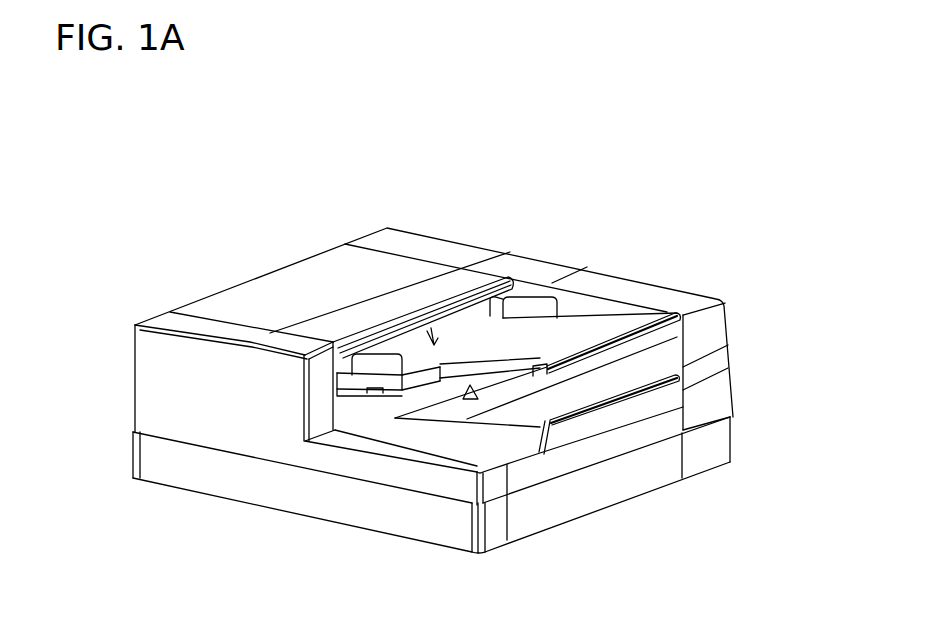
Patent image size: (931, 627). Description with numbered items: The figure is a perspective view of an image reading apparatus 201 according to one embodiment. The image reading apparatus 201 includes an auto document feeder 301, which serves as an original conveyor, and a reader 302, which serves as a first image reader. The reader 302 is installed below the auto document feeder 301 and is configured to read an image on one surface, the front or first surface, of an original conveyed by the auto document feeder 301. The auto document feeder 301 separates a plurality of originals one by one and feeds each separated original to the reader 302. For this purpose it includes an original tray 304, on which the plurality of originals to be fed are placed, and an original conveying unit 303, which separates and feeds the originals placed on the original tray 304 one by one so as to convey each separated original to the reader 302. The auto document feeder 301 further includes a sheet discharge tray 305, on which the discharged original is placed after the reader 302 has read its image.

The image reading apparatus 201 is at (577, 207).
The auto document feeder 301 is at (458, 237).
The reader 302 is at (735, 436).
The original conveying unit 303 is at (291, 289).
The original tray 304 is at (585, 328).
The sheet discharge tray 305 is at (613, 381).